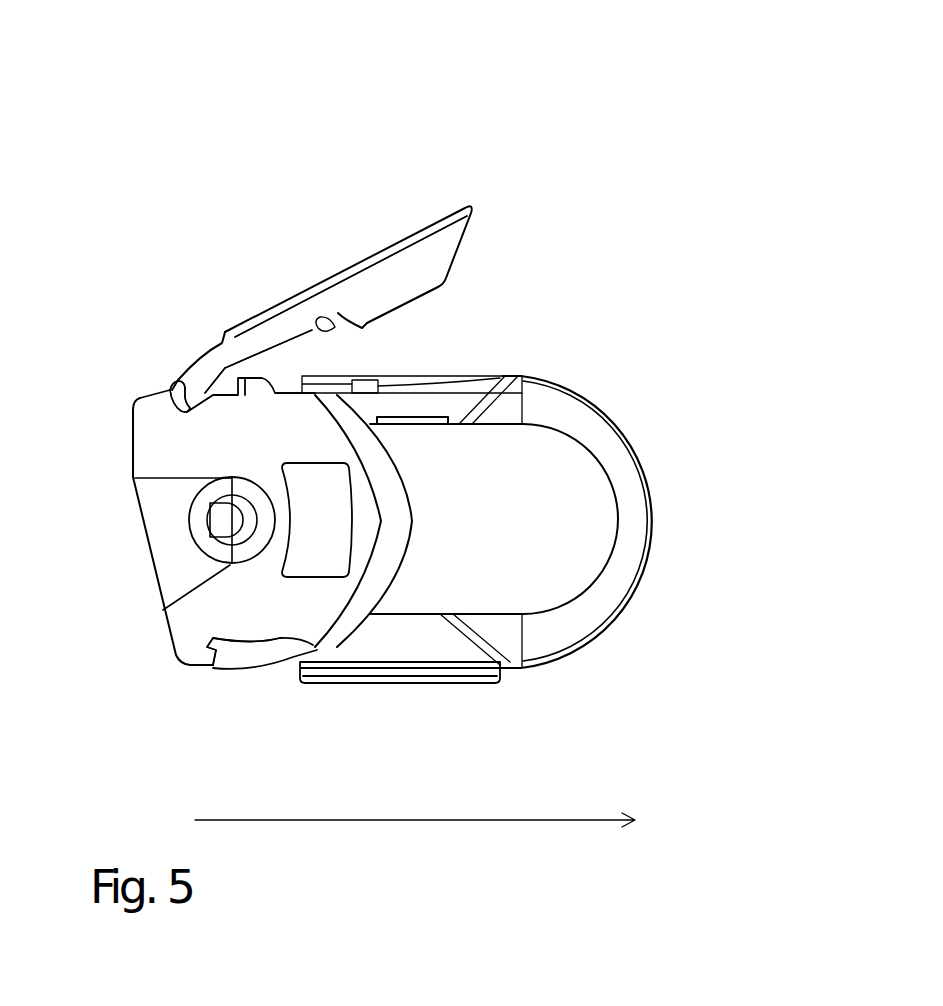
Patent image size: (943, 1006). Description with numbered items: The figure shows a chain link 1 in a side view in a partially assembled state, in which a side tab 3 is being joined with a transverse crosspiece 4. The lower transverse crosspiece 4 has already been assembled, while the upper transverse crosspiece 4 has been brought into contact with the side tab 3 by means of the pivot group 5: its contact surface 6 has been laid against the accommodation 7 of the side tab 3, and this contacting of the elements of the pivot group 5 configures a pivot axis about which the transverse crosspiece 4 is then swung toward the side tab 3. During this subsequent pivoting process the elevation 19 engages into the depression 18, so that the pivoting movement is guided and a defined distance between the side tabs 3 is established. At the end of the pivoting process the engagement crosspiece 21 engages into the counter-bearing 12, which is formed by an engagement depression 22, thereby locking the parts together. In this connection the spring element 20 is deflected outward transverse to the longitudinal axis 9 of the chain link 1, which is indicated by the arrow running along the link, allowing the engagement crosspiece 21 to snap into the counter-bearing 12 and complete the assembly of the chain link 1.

The chain link 1 is at (112, 102).
The side tab 3 is at (507, 532).
The transverse crosspiece 4 is at (307, 282).
The pivot group 5 is at (165, 388).
The contact surface 6 is at (182, 408).
The accommodation 7 is at (208, 665).
The longitudinal axis 9 is at (490, 820).
The counter-bearing 12 is at (423, 413).
The depression 18 is at (226, 368).
The elevation 19 is at (218, 385).
The spring element 20 is at (373, 288).
The engagement crosspiece 21 is at (427, 291).
The engagement depression 22 is at (423, 413).